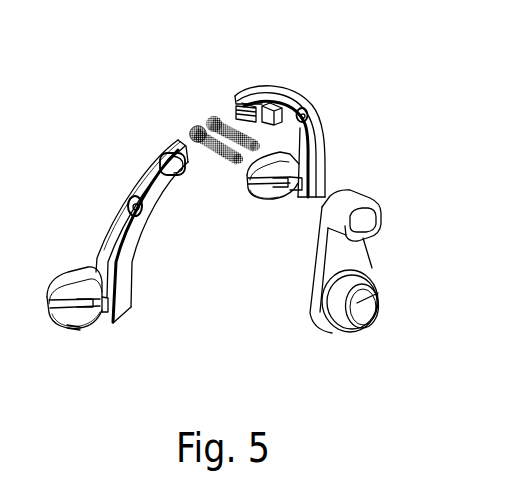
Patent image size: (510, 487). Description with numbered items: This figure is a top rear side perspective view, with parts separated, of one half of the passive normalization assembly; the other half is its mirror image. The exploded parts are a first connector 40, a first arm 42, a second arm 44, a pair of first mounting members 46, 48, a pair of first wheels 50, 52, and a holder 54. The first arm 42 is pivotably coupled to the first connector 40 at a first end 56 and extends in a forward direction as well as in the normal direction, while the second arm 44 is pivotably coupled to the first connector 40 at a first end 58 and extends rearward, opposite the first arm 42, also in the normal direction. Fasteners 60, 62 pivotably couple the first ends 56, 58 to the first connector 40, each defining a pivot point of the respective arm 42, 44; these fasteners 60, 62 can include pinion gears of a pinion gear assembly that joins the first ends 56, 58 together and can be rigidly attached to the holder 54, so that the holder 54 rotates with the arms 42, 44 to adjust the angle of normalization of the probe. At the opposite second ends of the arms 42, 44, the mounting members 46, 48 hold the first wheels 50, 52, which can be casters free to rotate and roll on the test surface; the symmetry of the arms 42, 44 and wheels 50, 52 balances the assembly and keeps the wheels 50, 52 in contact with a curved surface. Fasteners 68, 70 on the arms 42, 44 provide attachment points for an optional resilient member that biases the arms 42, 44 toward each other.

The first connector 40 is at (359, 201).
The first arm 42 is at (313, 141).
The second arm 44 is at (108, 224).
The first mounting member 46 is at (291, 168).
The first mounting member 48 is at (70, 285).
The first wheel 50 is at (272, 203).
The first wheel 52 is at (78, 329).
The holder 54 is at (357, 248).
The first end 56 is at (258, 88).
The first end 58 is at (153, 150).
The fastener 60 is at (217, 110).
The fastener 62 is at (189, 128).
The fastener 68 is at (308, 112).
The fastener 70 is at (140, 213).